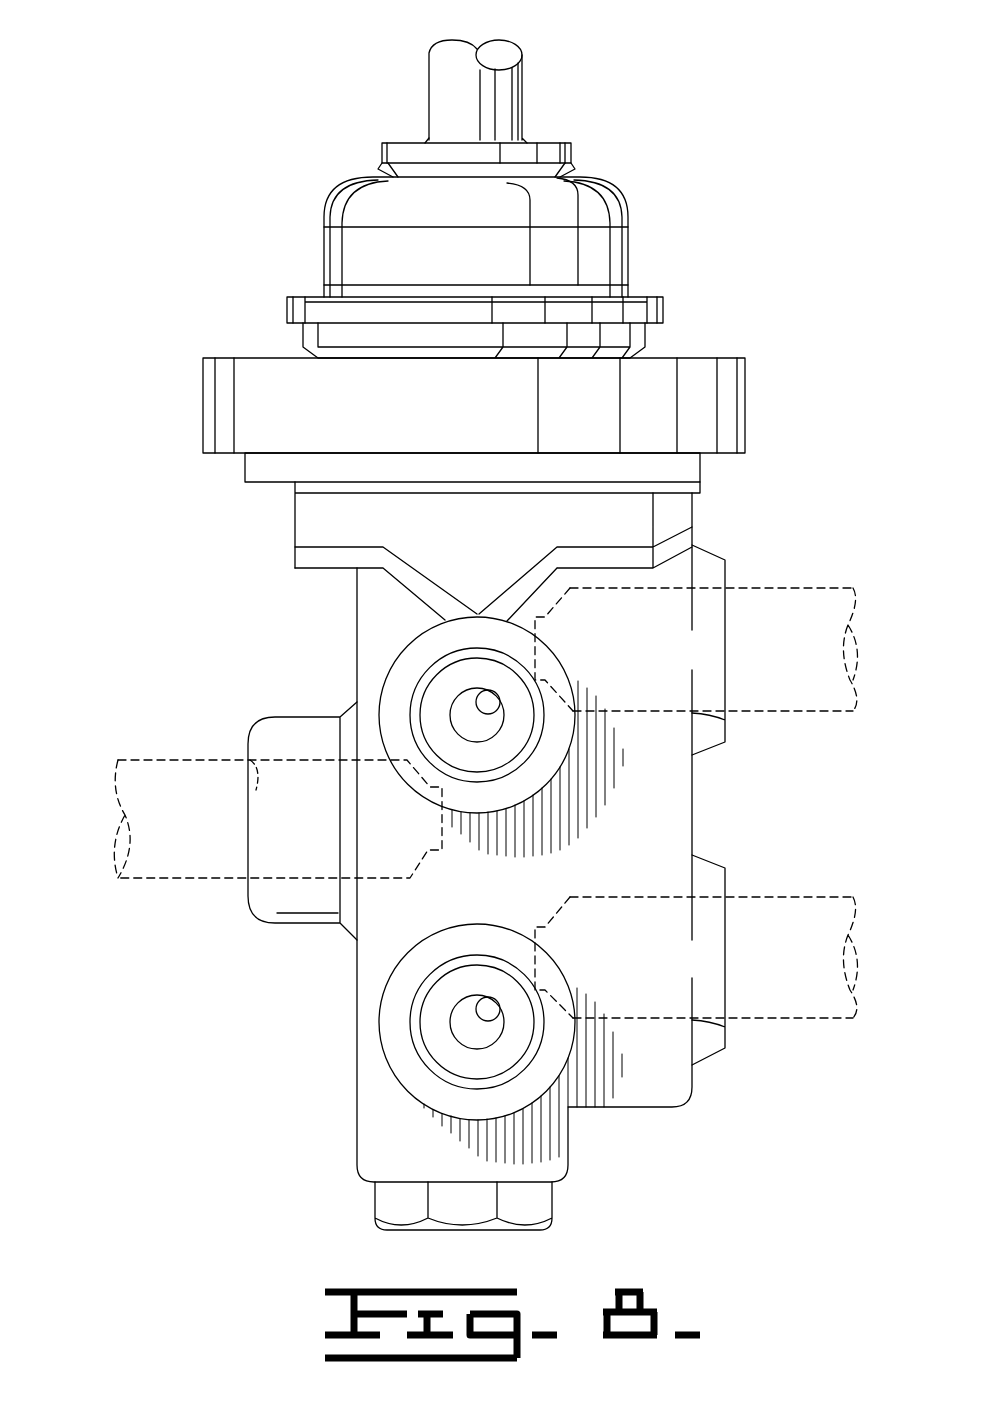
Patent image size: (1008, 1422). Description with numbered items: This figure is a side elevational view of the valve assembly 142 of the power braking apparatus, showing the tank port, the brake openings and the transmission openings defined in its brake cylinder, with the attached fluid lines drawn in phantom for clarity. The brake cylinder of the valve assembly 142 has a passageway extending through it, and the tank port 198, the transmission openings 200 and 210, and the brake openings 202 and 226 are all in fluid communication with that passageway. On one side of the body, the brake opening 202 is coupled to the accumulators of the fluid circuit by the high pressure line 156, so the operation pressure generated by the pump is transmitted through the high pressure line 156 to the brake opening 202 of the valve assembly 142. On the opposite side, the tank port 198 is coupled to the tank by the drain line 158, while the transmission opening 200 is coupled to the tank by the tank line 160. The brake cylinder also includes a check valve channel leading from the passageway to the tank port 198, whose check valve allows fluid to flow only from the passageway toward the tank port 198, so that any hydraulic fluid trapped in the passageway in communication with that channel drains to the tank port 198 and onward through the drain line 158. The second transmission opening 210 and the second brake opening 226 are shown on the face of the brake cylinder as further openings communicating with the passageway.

The valve assembly 142 is at (667, 100).
The high pressure line 156 is at (118, 760).
The drain line 158 is at (856, 600).
The tank line 160 is at (856, 907).
The tank port 198 is at (714, 583).
The transmission opening 200 is at (714, 895).
The brake opening 202 is at (266, 890).
The transmission opening 210 is at (502, 1014).
The brake opening 226 is at (502, 707).